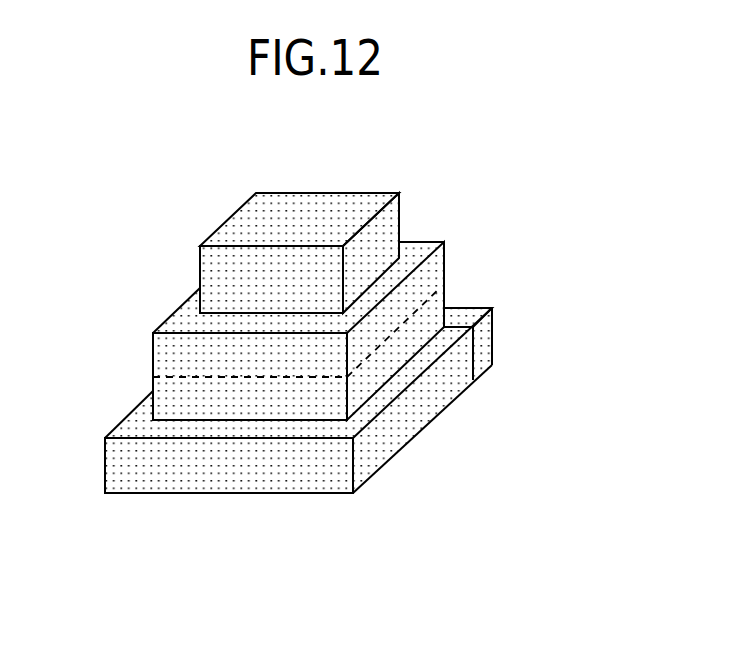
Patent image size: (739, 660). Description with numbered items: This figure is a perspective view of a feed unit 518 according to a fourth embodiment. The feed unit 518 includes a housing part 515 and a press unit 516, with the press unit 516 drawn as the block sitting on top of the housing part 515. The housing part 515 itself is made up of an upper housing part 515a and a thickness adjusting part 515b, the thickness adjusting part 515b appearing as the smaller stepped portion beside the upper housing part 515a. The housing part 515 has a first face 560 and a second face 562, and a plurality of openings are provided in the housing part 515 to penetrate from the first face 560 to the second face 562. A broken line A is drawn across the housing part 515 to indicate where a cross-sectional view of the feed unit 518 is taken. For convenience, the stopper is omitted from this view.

The feed unit 518 is at (81, 243).
The press unit 516 is at (308, 198).
The first face 560 is at (187, 306).
The housing part 515 is at (606, 183).
The upper housing part 515a is at (412, 252).
The thickness adjusting part 515b is at (470, 307).
The second face 562 is at (238, 494).
The broken line A is at (397, 333).